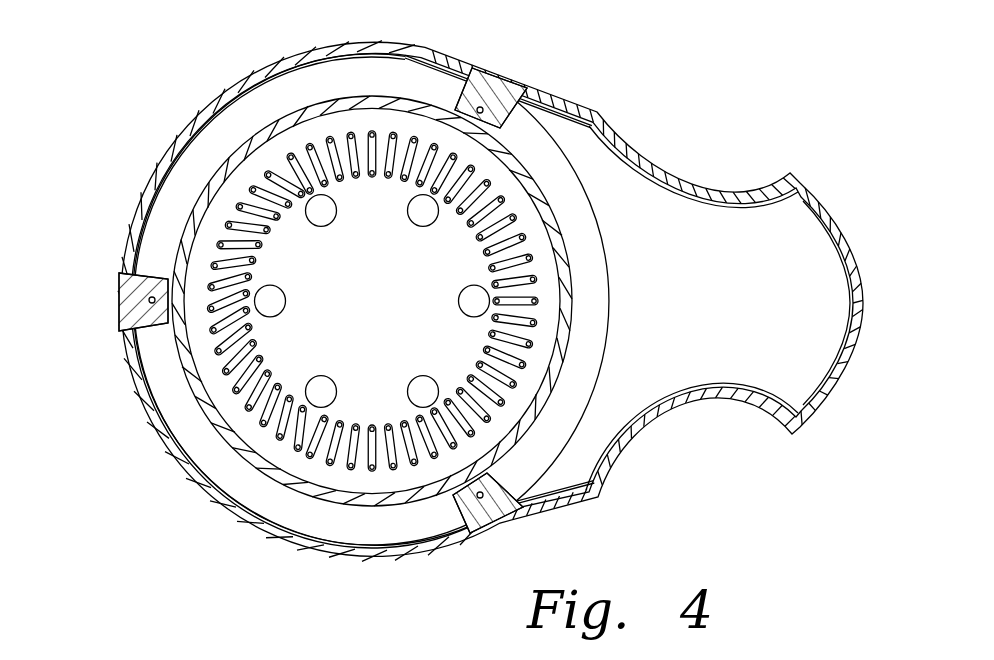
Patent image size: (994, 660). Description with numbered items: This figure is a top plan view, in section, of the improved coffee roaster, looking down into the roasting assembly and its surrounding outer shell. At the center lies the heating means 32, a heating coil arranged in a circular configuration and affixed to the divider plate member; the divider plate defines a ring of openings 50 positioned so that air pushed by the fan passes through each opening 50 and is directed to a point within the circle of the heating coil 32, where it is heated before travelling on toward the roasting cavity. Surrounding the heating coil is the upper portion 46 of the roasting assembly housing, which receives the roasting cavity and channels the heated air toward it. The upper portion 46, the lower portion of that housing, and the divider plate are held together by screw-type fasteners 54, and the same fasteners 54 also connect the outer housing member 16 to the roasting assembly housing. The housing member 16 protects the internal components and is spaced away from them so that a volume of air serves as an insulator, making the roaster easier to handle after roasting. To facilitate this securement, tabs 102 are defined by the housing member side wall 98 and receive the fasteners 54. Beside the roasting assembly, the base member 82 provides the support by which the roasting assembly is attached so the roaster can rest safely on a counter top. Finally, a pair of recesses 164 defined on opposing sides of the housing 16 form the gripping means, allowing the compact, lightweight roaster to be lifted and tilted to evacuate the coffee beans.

The housing member 16 is at (573, 93).
The heating means 32 is at (287, 435).
The upper portion 46 is at (575, 300).
The opening 50 is at (305, 388).
The screw-type fasteners 54 is at (484, 106).
The base member 82 is at (743, 292).
The housing member side wall 98 is at (846, 233).
The tabs 102 is at (456, 110).
The recesses 164 is at (707, 192).